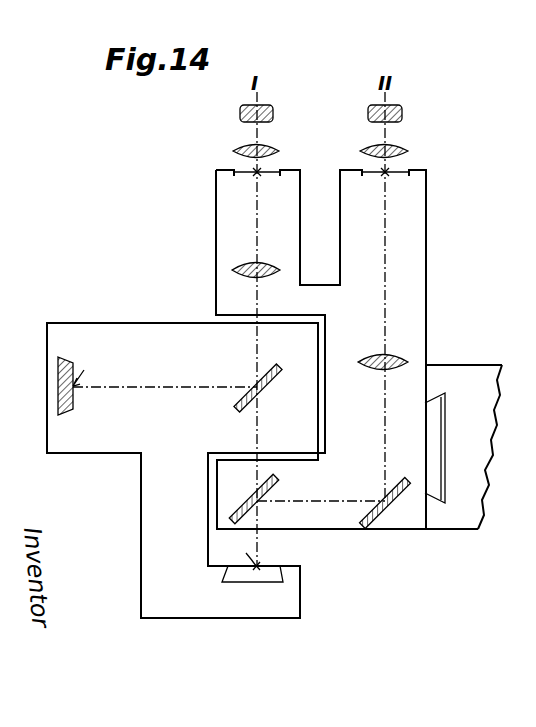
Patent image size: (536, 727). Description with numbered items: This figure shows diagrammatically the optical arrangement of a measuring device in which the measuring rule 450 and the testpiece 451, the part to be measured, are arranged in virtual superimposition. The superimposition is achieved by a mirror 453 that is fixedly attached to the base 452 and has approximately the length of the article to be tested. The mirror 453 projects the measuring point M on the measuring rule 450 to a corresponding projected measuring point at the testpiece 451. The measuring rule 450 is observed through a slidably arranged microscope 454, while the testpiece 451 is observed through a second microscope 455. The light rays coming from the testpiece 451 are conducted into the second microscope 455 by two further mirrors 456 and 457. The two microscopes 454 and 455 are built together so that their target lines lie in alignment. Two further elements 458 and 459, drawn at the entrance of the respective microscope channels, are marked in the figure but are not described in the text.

The measuring rule 450 is at (76, 402).
The testpiece 451 is at (272, 573).
The base 452 is at (149, 477).
The mirror 453 is at (259, 392).
The microscope 454 is at (240, 113).
The second microscope 455 is at (412, 113).
The mirror 456 is at (281, 477).
The mirror 457 is at (372, 526).
The slit / aperture of channel I 458 is at (259, 174).
The slit / aperture of channel II 459 is at (387, 174).